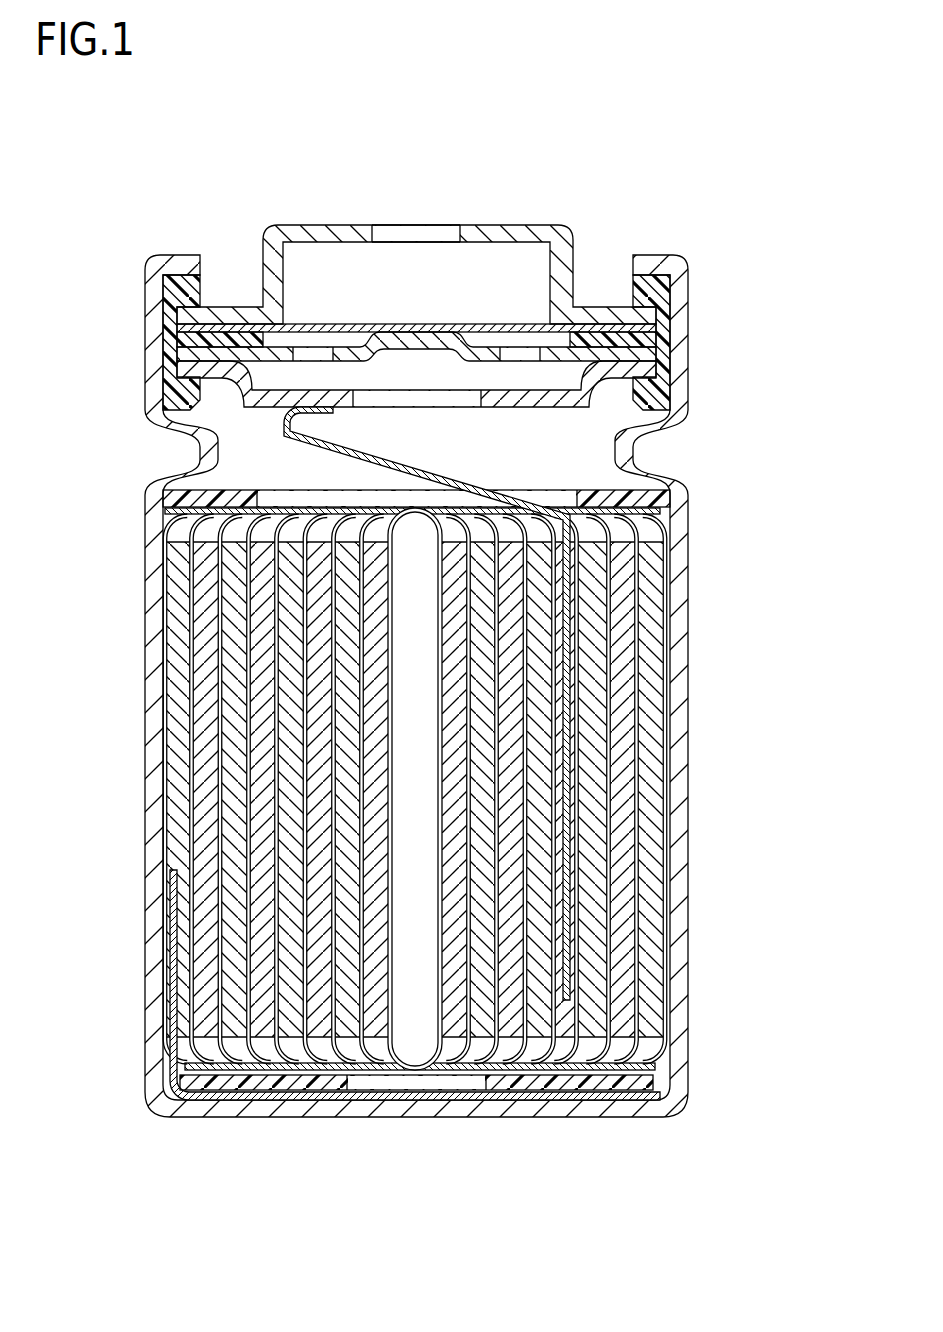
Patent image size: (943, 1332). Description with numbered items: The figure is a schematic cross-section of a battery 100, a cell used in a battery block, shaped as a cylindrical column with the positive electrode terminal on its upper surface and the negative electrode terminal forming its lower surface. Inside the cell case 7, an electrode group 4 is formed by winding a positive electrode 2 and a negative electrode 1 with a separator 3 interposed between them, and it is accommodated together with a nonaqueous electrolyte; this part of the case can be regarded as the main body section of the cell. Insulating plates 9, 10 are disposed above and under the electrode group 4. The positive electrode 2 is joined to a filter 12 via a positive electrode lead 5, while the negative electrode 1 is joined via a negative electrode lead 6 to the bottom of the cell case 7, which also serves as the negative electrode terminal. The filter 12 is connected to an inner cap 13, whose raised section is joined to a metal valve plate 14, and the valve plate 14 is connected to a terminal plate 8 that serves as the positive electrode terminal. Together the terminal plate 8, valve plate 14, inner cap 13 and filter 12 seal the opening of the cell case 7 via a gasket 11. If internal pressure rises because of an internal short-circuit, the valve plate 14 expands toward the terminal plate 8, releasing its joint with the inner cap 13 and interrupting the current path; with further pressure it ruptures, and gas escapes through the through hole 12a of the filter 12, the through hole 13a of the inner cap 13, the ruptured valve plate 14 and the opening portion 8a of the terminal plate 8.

The battery 100 is at (692, 160).
The negative electrode 1 is at (653, 778).
The positive electrode 2 is at (627, 810).
The separator 3 is at (668, 736).
The electrode group 4 is at (783, 742).
The positive electrode lead 5 is at (292, 441).
The negative electrode lead 6 is at (452, 1100).
The cell case 7 is at (145, 702).
The terminal plate 8 is at (505, 232).
The opening portion 8a is at (415, 240).
The insulating plate 9 is at (667, 501).
The insulating plate 10 is at (660, 1082).
The gasket 11 is at (663, 300).
The filter 12 is at (600, 395).
The through hole 12a is at (415, 400).
The inner cap 13 is at (370, 350).
The through hole 13a is at (327, 357).
The valve plate 14 is at (307, 327).